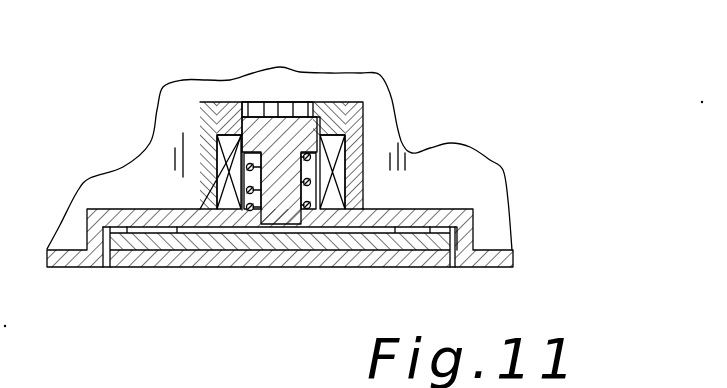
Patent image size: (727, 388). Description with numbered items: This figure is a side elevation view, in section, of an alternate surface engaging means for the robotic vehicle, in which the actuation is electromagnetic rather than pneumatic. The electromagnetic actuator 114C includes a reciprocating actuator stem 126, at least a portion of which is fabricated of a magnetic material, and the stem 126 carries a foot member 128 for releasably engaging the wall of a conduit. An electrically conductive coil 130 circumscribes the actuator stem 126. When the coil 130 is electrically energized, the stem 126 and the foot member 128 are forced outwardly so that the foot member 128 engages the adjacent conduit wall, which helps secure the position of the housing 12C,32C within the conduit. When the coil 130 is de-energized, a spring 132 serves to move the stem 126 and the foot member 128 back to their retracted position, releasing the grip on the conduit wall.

The actuator stem 126 is at (283, 128).
The electromagnetic actuator 114C is at (358, 148).
The electrically conductive coil 130 is at (220, 171).
The spring 132 is at (303, 180).
The housing 12C,32C is at (498, 197).
The foot member 128 is at (311, 262).